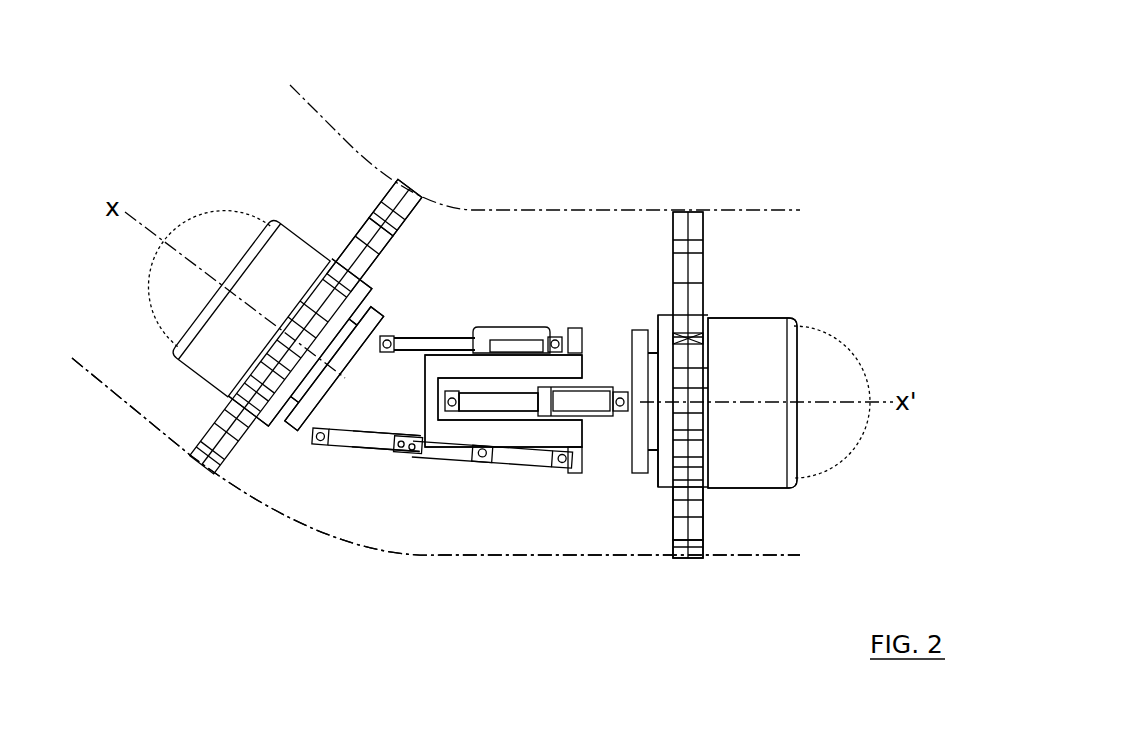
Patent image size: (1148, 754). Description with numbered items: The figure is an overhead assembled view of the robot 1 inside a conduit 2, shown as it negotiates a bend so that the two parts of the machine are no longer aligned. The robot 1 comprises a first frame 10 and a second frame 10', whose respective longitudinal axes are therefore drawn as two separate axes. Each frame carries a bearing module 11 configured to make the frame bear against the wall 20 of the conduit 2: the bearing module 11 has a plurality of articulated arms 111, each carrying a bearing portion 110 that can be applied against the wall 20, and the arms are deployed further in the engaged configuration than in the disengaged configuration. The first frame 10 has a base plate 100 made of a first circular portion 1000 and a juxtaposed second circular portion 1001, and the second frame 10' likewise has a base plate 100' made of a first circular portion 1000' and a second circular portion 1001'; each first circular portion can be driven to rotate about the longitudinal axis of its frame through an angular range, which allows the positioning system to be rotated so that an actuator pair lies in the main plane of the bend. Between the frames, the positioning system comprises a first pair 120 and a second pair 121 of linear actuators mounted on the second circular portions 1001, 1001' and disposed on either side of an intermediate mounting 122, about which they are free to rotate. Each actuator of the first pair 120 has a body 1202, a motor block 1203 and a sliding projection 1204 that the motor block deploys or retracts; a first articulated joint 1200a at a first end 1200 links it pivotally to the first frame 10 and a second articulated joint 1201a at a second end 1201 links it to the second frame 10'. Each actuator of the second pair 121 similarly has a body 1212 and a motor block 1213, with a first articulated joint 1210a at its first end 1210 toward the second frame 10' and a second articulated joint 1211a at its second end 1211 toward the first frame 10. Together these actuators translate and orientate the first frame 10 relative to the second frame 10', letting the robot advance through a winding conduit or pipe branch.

The robot 1 is at (858, 312).
The conduit 2 is at (827, 568).
The wall 20 is at (810, 554).
The first frame 10 is at (192, 304).
The base plate 100 is at (224, 408).
The first circular portion 1000 is at (248, 415).
The second circular portion 1001 is at (246, 407).
The bearing module 11 is at (698, 472).
The bearing portion 110 is at (683, 553).
The articulated arm 111 is at (679, 517).
The second frame 10' is at (820, 356).
The base plate 100' is at (795, 251).
The first circular portion 1000' is at (803, 257).
The second circular portion 1001' is at (790, 291).
The first pair of linear actuators 120 is at (433, 335).
The second pair of linear actuators 121 is at (665, 85).
The second end 1211 is at (497, 400).
The second articulated joint 1211a is at (487, 349).
The body 1212 is at (589, 394).
The motor block 1213 is at (618, 396).
The first articulated joint 1210a is at (638, 342).
The first end 1210 is at (653, 360).
The intermediate mounting 122 is at (573, 436).
The first end 1200 is at (324, 430).
The first articulated joint 1200a is at (319, 440).
The second end 1201 is at (551, 463).
The second articulated joint 1201a is at (560, 462).
The body 1202 is at (408, 448).
The motor block 1203 is at (483, 458).
The sliding projection 1204 is at (350, 437).